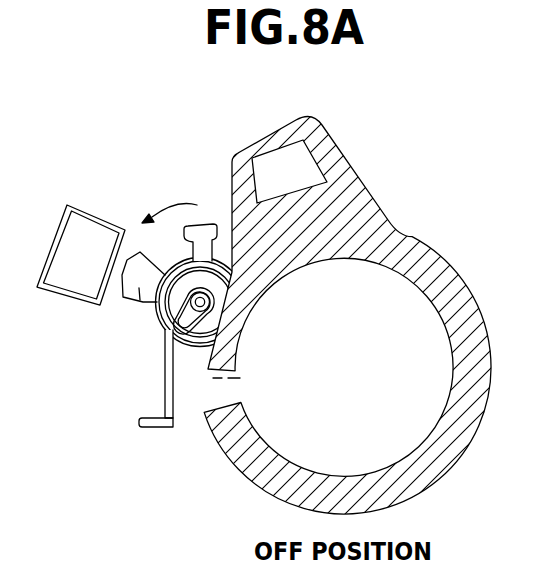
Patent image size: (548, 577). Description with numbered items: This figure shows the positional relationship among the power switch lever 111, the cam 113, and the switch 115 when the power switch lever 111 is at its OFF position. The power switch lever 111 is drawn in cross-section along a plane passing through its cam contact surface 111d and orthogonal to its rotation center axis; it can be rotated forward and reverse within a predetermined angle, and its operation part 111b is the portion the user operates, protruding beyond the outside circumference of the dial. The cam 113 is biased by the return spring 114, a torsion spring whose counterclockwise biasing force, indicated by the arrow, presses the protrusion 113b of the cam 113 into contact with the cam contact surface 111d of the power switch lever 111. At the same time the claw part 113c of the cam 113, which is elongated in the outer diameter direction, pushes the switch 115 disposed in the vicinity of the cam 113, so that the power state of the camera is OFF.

The power switch lever 111 is at (274, 288).
The operation part 111b is at (303, 120).
The cam contact surface 111d is at (218, 383).
The cam 113 is at (197, 205).
The protrusion 113b is at (168, 345).
The claw part 113c is at (132, 304).
The return spring 114 is at (150, 428).
The switch 115 is at (92, 208).